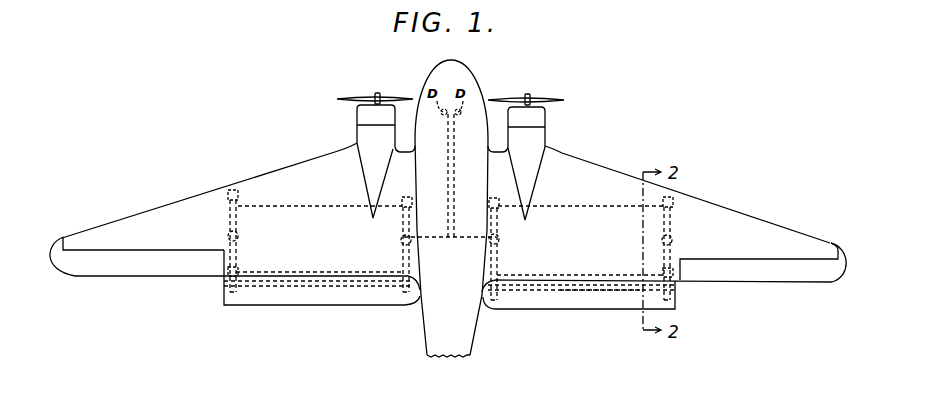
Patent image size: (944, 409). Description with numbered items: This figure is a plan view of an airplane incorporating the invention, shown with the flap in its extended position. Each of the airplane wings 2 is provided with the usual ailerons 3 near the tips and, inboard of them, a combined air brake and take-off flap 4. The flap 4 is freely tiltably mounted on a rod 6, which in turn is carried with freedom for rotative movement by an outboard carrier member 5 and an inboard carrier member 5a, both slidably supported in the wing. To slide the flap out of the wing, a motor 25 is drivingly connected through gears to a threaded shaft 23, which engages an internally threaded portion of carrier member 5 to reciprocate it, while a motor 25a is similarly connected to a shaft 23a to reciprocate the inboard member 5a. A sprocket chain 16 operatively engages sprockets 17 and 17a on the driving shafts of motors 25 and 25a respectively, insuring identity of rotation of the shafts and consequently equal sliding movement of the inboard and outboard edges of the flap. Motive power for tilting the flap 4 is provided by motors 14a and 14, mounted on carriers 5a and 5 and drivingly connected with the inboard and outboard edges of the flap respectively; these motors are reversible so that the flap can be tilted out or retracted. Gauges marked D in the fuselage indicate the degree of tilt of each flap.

The airplane wings 2 is at (140, 220).
The ailerons 3 is at (168, 267).
The combined air brake and take-off flap 4 is at (340, 299).
The carrier member 5 is at (662, 262).
The inboard carrier member 5a is at (498, 268).
The rod 6 is at (560, 290).
The motor 14 is at (672, 243).
The motor 14a is at (488, 240).
The sprocket chain 16 is at (450, 201).
The sprocket 17 is at (663, 212).
The sprocket 17a is at (491, 211).
The threaded shaft 23 is at (672, 220).
The shaft 23a is at (498, 226).
The motor 25 is at (673, 200).
The motor 25a is at (231, 196).